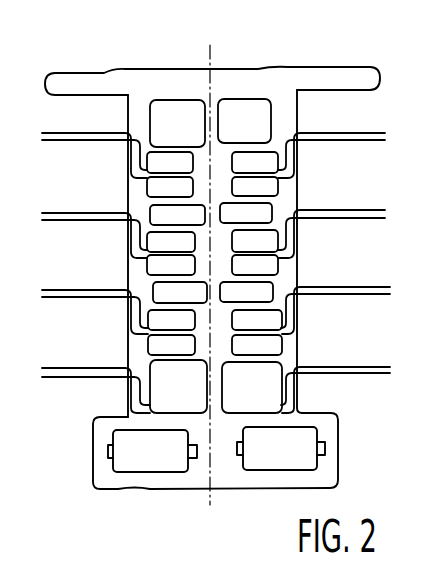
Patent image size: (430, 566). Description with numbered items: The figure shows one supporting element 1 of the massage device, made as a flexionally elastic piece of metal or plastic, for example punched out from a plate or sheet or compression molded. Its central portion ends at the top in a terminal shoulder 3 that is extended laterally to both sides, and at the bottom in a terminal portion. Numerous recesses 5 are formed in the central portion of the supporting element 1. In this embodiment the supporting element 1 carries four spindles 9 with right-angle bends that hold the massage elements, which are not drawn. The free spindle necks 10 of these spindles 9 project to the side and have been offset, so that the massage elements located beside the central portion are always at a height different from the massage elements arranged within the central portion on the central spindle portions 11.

The supporting element 1 is at (212, 251).
The terminal shoulder 3 is at (88, 82).
The recesses 5 is at (160, 162).
The spindles 9 is at (260, 242).
The free spindle necks 10 is at (353, 137).
The central spindle portions 11 is at (157, 180).